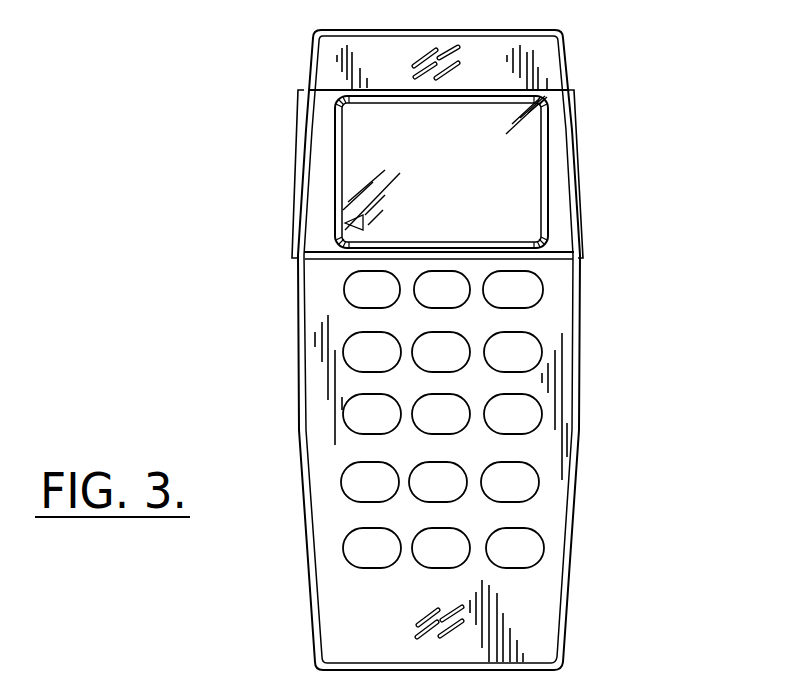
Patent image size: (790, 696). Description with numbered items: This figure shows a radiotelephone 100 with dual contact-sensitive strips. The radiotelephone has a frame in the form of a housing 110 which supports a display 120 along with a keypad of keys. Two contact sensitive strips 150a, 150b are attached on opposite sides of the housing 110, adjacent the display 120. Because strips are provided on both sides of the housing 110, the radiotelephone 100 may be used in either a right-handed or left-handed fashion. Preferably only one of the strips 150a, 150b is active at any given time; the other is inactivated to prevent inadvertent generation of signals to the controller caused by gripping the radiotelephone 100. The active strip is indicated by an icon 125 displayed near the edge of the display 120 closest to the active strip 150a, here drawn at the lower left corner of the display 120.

The radiotelephone 100 is at (625, 308).
The housing 110 is at (437, 29).
The display 120 is at (534, 111).
The icon 125 is at (345, 223).
The contact sensitive strip 150a is at (297, 162).
The contact sensitive strip 150b is at (577, 157).